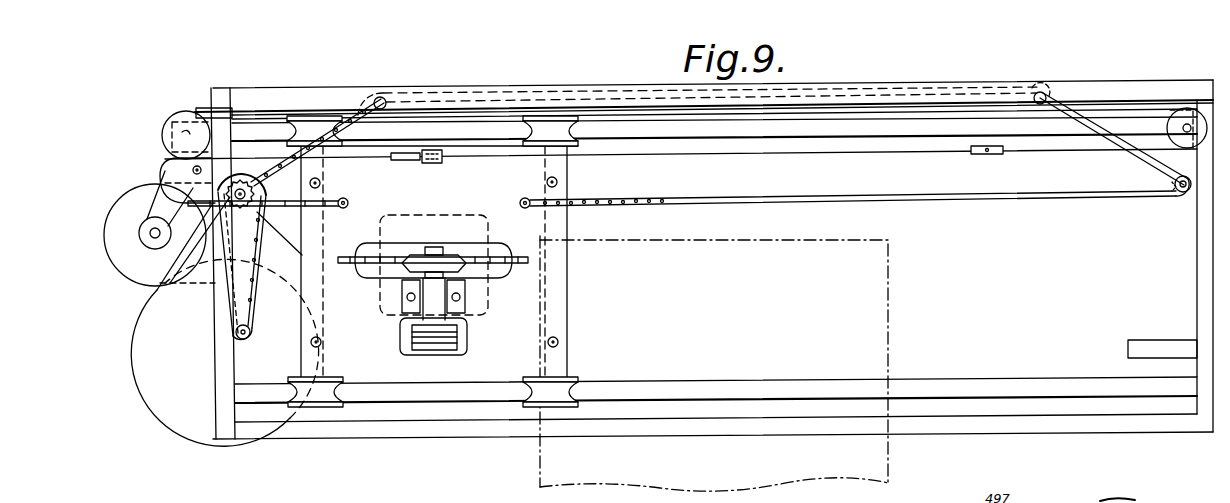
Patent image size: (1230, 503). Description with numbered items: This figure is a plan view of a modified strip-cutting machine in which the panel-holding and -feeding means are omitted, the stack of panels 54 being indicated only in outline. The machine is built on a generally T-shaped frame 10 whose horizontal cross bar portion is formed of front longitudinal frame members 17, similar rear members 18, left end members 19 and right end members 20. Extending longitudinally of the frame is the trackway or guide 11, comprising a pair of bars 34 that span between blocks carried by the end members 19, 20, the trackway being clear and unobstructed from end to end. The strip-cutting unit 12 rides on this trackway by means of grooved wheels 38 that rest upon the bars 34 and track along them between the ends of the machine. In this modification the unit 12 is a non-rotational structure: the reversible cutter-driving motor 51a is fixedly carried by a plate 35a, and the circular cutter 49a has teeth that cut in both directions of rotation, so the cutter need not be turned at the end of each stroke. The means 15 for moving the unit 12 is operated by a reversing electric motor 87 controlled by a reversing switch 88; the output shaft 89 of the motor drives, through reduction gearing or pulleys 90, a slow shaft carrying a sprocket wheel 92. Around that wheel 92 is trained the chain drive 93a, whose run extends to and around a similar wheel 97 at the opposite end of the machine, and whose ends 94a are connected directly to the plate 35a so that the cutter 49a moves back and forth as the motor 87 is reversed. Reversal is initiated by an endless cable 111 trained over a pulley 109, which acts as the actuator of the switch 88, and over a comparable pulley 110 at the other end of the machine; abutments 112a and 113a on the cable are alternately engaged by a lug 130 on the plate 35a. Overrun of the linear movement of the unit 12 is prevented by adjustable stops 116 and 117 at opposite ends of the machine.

The frame 10 is at (695, 268).
The trackway or guide 11 is at (483, 408).
The strip-cutting unit 12 is at (459, 270).
The means to move the unit 15 is at (150, 290).
The front horizontal and longitudinal frame members 17 is at (302, 433).
The rear frame members 18 is at (340, 92).
The left end frame members 19 is at (215, 347).
The right end frame members 20 is at (1197, 263).
The bars or tubes 34 is at (843, 142).
The plate 35a is at (390, 363).
The grooved rollers or wheels 38 is at (530, 127).
The circular cutter 49a is at (506, 272).
The cutter-driving motor 51a is at (392, 277).
The stack of panels 54 is at (888, 310).
The electric motor 87 is at (125, 206).
The reversing switch 88 is at (208, 113).
The output shaft 89 is at (153, 238).
The reduction gearing or pulleys 90 is at (160, 167).
The sprocket wheel 92 is at (252, 187).
The chain drive 93a is at (318, 197).
The chain ends 94a is at (343, 209).
The wheel 97 is at (1178, 183).
The pulley 109 is at (168, 130).
The pulley 110 is at (1183, 110).
The endless cable 111 is at (762, 158).
The abutment 112a is at (405, 161).
The abutment 113a is at (975, 155).
The adjustable stop 116 is at (280, 353).
The adjustable stop 117 is at (1165, 328).
The lug 130 is at (440, 163).